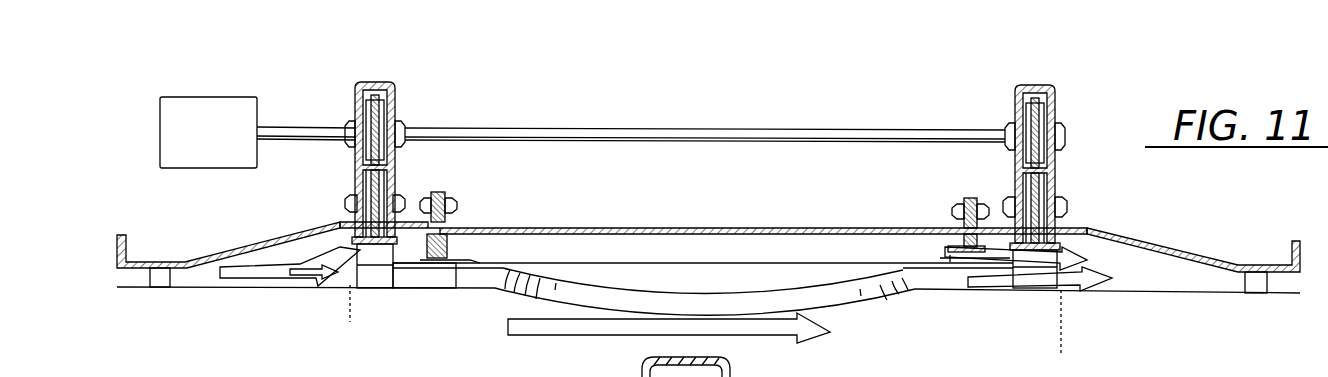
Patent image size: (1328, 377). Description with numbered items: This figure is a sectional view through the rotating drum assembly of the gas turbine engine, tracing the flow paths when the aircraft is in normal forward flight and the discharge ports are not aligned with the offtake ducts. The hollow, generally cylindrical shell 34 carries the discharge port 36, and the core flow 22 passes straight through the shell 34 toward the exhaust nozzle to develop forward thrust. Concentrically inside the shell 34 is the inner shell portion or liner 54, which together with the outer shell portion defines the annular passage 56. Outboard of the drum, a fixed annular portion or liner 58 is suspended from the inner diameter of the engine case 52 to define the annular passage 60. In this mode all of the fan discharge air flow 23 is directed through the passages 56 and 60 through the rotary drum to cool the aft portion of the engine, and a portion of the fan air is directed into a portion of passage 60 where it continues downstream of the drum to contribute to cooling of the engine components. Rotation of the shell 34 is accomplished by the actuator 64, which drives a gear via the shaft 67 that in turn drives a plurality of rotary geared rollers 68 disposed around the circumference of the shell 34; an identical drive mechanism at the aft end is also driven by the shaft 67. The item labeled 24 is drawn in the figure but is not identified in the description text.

The core flow 22 is at (560, 335).
The fan discharge air flow 23 is at (273, 273).
The mounting bolt 24 is at (457, 270).
The shell 34 is at (933, 262).
The discharge port 36 is at (877, 292).
The engine case 52 is at (1185, 252).
The inner shell portion or liner 54 is at (945, 292).
The annular passage 56 is at (430, 290).
The fixed annular portion or liner 58 is at (770, 262).
The annular passage 60 is at (615, 246).
The actuator 64 is at (392, 108).
The shaft 67 is at (727, 128).
The rotary geared rollers 68 is at (362, 290).